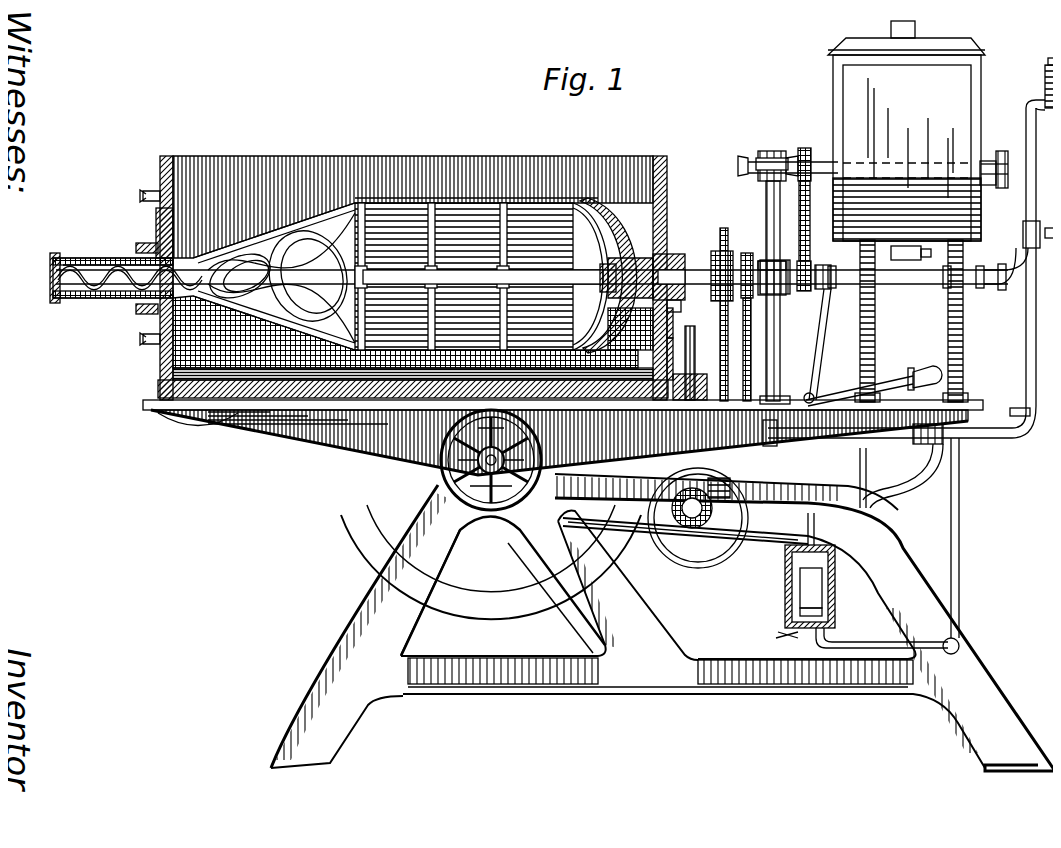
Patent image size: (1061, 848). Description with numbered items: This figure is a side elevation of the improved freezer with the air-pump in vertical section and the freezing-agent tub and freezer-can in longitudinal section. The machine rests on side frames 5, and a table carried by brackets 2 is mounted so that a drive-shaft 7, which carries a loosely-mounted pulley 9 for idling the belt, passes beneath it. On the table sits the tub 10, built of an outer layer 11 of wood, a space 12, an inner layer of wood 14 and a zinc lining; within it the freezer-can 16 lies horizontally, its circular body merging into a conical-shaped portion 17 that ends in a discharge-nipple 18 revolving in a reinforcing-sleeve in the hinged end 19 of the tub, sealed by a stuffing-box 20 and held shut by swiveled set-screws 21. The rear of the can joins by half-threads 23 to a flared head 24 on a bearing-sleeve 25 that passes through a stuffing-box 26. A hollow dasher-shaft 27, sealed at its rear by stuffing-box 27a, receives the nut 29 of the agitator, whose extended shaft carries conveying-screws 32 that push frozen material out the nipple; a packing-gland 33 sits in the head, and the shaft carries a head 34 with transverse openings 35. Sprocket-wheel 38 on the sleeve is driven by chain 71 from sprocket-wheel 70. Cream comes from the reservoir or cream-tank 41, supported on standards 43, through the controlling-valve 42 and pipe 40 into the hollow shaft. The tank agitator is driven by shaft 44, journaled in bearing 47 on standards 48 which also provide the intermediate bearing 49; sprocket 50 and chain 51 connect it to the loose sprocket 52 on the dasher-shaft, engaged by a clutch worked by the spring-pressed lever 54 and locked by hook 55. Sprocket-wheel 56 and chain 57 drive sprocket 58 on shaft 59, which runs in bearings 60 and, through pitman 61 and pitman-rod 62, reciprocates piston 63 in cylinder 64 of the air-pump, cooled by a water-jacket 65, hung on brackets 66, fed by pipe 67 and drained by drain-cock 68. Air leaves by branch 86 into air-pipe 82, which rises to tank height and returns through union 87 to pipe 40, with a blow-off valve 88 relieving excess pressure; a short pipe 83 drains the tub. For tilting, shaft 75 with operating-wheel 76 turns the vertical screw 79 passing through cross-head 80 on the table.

The brackets 2 is at (318, 430).
The side frames 5 is at (662, 628).
The drive-shaft 7 is at (472, 485).
The loosely-mounted pulley 9 is at (433, 462).
The tub 10 is at (242, 152).
The outer layer 11 is at (243, 400).
The space 12 is at (272, 400).
The inner layer of wood 14 is at (222, 400).
The freezer-can 16 is at (400, 195).
The conical-shaped portion 17 is at (300, 210).
The discharge-nipple 18 is at (112, 283).
The hinged end 19 is at (152, 218).
The stuffing-box 20 is at (138, 306).
The swiveled set-screws 21 is at (135, 331).
The half-threads 23 is at (585, 192).
The flared head 24 is at (625, 214).
The bearing-sleeve 25 is at (660, 306).
The stuffing-box 26 is at (672, 298).
The hollow dasher-shaft 27 is at (774, 252).
The stuffing-box 27a is at (824, 280).
The nut 29 is at (592, 262).
The conveying-screws 32 is at (44, 275).
The packing-gland 33 is at (655, 248).
The head 34 is at (659, 332).
The transverse openings 35 is at (618, 246).
The sprocket-wheel 38 is at (712, 242).
The pipe 40 is at (880, 276).
The reservoir or cream-tank 41 is at (907, 148).
The controlling-valve 42 is at (883, 246).
The standards 43 is at (866, 320).
The shaft 44 is at (742, 158).
The bearing 47 is at (764, 144).
The standards 48 is at (758, 200).
The intermediate bearing 49 is at (770, 290).
The sprocket or gear wheel 50 is at (798, 140).
The chain 51 is at (791, 210).
The sprocket or gear wheel 52 is at (808, 284).
The spring-pressed lever 54 is at (868, 376).
The hook 55 is at (910, 374).
The sprocket-wheel 56 is at (740, 244).
The chain 57 is at (752, 356).
The sprocket wheel 58 is at (748, 522).
The shaft 59 is at (770, 440).
The bearings 60 is at (780, 498).
The pitman 61 is at (900, 428).
The pitman-rod 62 is at (840, 432).
The piston 63 is at (790, 580).
The cylinder 64 is at (826, 586).
The water-jacket 65 is at (775, 610).
The brackets 66 is at (858, 465).
The pipe 67 is at (890, 490).
The drain-cock 68 is at (790, 645).
The sprocket-wheel 70 is at (710, 492).
The chain 71 is at (720, 322).
The shaft 75 is at (683, 520).
The operating-wheel 76 is at (658, 540).
The vertical screw 79 is at (685, 322).
The cross-head 80 is at (670, 378).
The air-pipe 82 is at (1030, 280).
The short pipe 83 is at (180, 418).
The branch 86 is at (952, 556).
The union 87 is at (1006, 264).
The blow-off valve 88 is at (1036, 76).